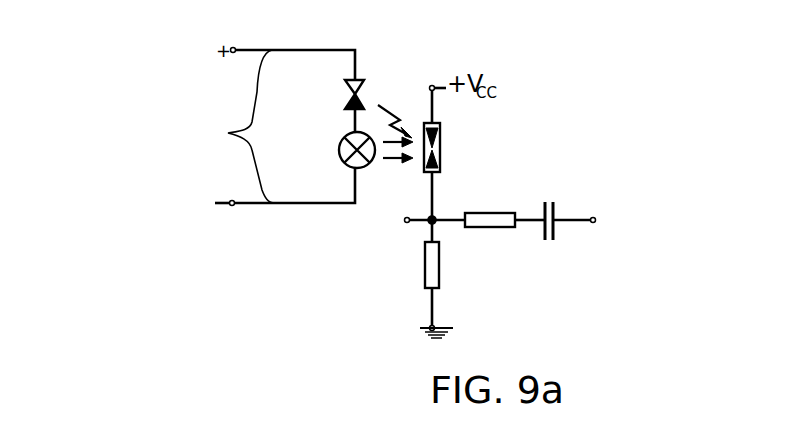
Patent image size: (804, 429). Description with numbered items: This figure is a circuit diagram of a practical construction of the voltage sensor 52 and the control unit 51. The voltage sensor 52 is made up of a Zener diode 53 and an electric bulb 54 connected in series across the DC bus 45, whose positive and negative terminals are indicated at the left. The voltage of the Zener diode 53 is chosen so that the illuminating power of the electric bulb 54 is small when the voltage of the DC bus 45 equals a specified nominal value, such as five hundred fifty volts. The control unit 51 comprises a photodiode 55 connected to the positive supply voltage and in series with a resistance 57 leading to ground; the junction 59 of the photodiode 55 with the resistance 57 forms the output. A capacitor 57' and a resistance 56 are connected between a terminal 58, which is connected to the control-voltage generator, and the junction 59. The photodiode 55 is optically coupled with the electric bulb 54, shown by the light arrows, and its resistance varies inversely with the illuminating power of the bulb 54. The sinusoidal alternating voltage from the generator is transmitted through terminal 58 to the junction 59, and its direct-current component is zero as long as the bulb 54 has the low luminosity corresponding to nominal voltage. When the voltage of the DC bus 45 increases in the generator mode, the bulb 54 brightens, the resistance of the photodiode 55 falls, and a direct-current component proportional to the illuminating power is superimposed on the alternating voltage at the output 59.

The DC bus 45 is at (236, 126).
The control unit 51 is at (418, 178).
The voltage sensor 52 is at (336, 131).
The Zener diode 53 is at (364, 93).
The electric bulb 54 is at (338, 152).
The photodiode 55 is at (442, 156).
The resistance 56 is at (495, 212).
The resistance 57 is at (471, 267).
The capacitor 57' is at (574, 193).
The terminal 58 is at (600, 222).
The junction 59 is at (407, 224).